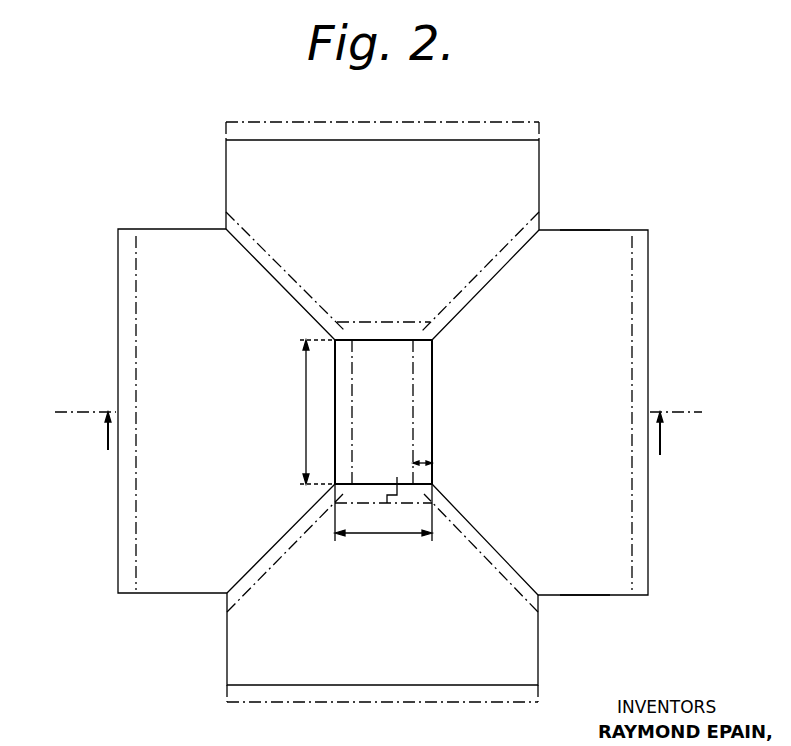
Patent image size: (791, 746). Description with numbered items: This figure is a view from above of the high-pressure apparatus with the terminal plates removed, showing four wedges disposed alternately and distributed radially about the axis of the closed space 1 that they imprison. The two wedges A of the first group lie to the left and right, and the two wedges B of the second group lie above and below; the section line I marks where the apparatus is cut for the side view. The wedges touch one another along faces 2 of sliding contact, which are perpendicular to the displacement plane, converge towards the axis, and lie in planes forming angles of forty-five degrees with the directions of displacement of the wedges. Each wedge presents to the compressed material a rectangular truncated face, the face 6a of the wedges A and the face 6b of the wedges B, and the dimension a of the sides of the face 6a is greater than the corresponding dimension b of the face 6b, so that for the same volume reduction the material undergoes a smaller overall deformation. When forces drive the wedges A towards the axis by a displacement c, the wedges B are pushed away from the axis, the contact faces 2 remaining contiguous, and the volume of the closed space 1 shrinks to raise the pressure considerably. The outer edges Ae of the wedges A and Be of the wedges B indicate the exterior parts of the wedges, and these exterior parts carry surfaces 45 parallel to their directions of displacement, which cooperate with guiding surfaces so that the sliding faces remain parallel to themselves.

The closed space 1 is at (390, 431).
The faces of sliding contact 2 is at (492, 280).
The surfaces parallel to the directions of displacement 45 is at (586, 232).
The truncated face of wedge A 6a is at (432, 390).
The truncated face of wedge B 6b is at (420, 484).
The wedges of the first group A is at (214, 434).
The wedges of the second group B is at (391, 241).
The edge of side flange Ae is at (128, 473).
The edge of top/bottom flange Be is at (392, 147).
The dimension of the sides of the truncated face 6a a is at (305, 412).
The dimension of the sides of the truncated face 6b b is at (383, 512).
The displacement of the wedges c is at (413, 463).
The section line I- I is at (378, 433).